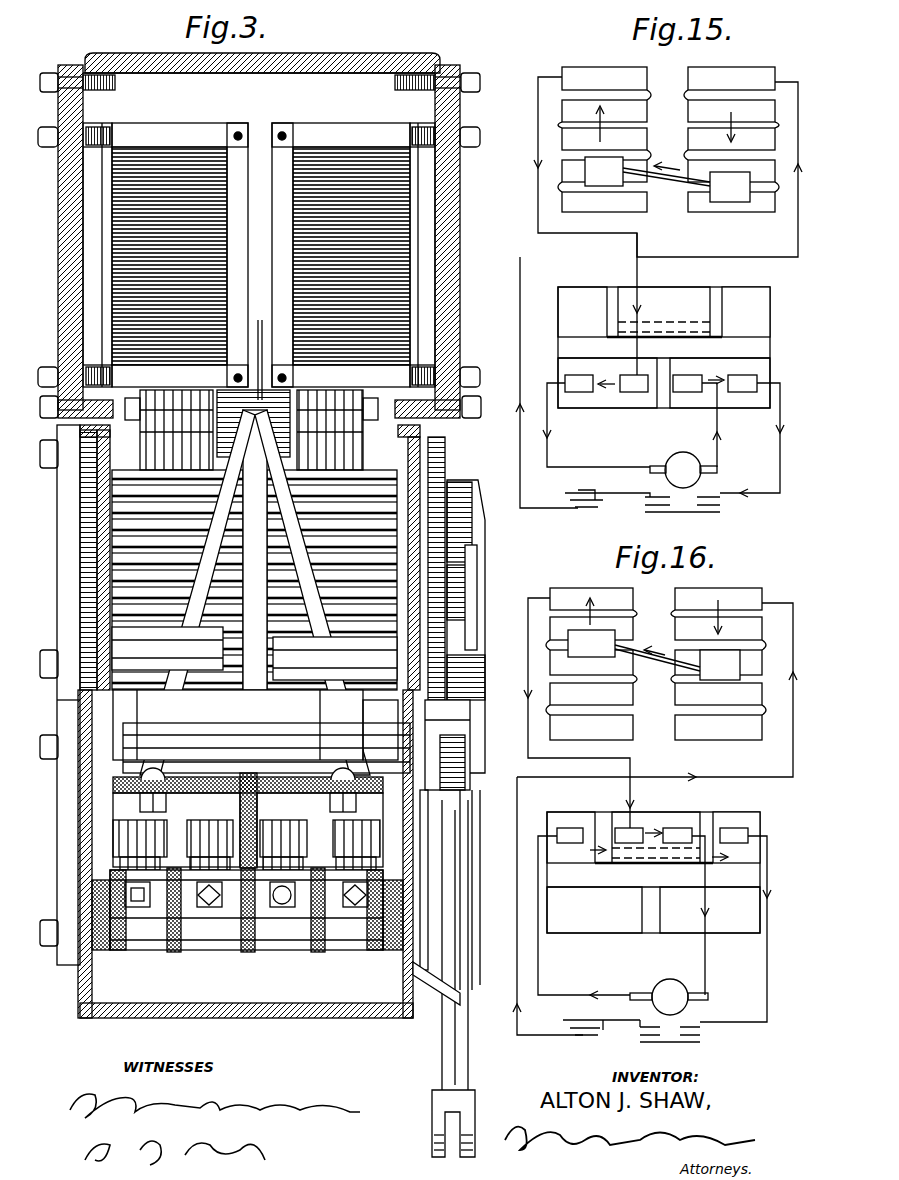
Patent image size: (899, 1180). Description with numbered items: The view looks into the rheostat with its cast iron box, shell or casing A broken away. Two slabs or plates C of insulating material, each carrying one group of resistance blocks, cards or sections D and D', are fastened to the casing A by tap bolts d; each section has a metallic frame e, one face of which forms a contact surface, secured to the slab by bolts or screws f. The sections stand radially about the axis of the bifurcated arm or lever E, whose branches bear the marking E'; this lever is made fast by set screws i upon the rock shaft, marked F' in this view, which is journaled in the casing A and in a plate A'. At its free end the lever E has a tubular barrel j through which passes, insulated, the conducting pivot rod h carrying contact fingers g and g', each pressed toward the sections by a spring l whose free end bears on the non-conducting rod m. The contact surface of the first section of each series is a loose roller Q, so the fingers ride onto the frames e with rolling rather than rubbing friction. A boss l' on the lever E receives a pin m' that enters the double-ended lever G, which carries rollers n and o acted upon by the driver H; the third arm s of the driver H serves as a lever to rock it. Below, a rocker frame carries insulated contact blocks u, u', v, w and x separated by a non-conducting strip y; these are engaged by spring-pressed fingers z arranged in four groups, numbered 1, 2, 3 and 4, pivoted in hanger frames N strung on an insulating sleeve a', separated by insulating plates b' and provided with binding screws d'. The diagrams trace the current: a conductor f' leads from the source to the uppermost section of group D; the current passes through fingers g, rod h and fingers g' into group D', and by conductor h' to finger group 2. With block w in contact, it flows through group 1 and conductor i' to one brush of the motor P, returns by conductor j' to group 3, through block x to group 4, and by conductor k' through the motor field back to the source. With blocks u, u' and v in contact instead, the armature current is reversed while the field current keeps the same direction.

In FIG. 3, the insulating slab C is at (258, 235).
In FIG. 3, the tap bolt d is at (262, 227).
In FIG. 3, the fastening screw f is at (256, 254).
In FIG. 3, the metallic frame e is at (259, 255).
In FIG. 3, the resistance section D' is at (180, 394).
In FIG. 15, the resistance section D' is at (604, 125).
In FIG. 16, the resistance section D' is at (591, 653).
In FIG. 3, the resistance section D is at (338, 394).
In FIG. 15, the resistance section D is at (731, 126).
In FIG. 16, the resistance section D is at (719, 654).
In FIG. 3, the tubular barrel j is at (254, 360).
In FIG. 3, the plate A' is at (237, 721).
In FIG. 3, the non-conducting rod m is at (55, 469).
In FIG. 3, the contact finger g' is at (215, 416).
In FIG. 15, the contact finger g' is at (604, 171).
In FIG. 16, the contact finger g' is at (591, 643).
In FIG. 3, the contact finger g is at (330, 414).
In FIG. 15, the contact finger g is at (686, 182).
In FIG. 16, the contact finger g is at (677, 662).
In FIG. 3, the conducting pivot rod h is at (254, 390).
In FIG. 3, the spring l is at (237, 496).
In FIG. 3, the lever E is at (233, 552).
In FIG. 3, the arms E' is at (255, 592).
In FIG. 3, the loose roller Q is at (254, 653).
In FIG. 3, the contact block v is at (238, 725).
In FIG. 15, the contact block v is at (664, 347).
In FIG. 16, the contact block v is at (653, 871).
In FIG. 3, the contact block u is at (124, 709).
In FIG. 15, the contact block u is at (582, 312).
In FIG. 16, the contact block u is at (571, 836).
In FIG. 3, the boss l' is at (350, 707).
In FIG. 3, the pin m' is at (380, 727).
In FIG. 3, the shaft F' is at (266, 748).
In FIG. 3, the non-conducting strip y is at (113, 785).
In FIG. 15, the non-conducting strip y is at (764, 348).
In FIG. 16, the non-conducting strip y is at (752, 876).
In FIG. 3, the set screw i is at (226, 792).
In FIG. 3, the contact block w is at (176, 830).
In FIG. 15, the contact block w is at (606, 393).
In FIG. 3, the contact block x is at (320, 829).
In FIG. 15, the contact block x is at (721, 395).
In FIG. 3, the spring-pressed finger z is at (200, 832).
In FIG. 15, the spring-pressed finger z is at (581, 393).
In FIG. 16, the spring-pressed finger z is at (573, 845).
In FIG. 3, the hanger frame N is at (246, 920).
In FIG. 3, the first group of contact fingers 1 is at (137, 913).
In FIG. 15, the first group of contact fingers 1 is at (579, 384).
In FIG. 16, the first group of contact fingers 1 is at (570, 836).
In FIG. 3, the second group of contact fingers 2 is at (209, 913).
In FIG. 15, the second group of contact fingers 2 is at (634, 384).
In FIG. 16, the second group of contact fingers 2 is at (629, 836).
In FIG. 3, the third group of contact fingers 3 is at (282, 913).
In FIG. 15, the third group of contact fingers 3 is at (687, 384).
In FIG. 16, the third group of contact fingers 3 is at (668, 836).
In FIG. 3, the fourth group of contact fingers 4 is at (355, 913).
In FIG. 15, the fourth group of contact fingers 4 is at (742, 384).
In FIG. 16, the fourth group of contact fingers 4 is at (734, 836).
In FIG. 3, the binding screw d' is at (117, 948).
In FIG. 3, the insulating plate b' is at (239, 976).
In FIG. 3, the casing A is at (273, 991).
In FIG. 3, the insulating sleeve a' is at (244, 935).
In FIG. 3, the driver H is at (480, 556).
In FIG. 3, the double-ended lever G is at (415, 745).
In FIG. 3, the roller n is at (465, 748).
In FIG. 3, the driver arm s is at (446, 973).
In FIG. 15, the conductor h' is at (572, 226).
In FIG. 16, the conductor h' is at (569, 713).
In FIG. 15, the conductor f' is at (664, 295).
In FIG. 16, the conductor f' is at (659, 819).
In FIG. 15, the contact block u' is at (746, 312).
In FIG. 16, the contact block u' is at (736, 837).
In FIG. 15, the conductor i' is at (596, 425).
In FIG. 16, the conductor i' is at (584, 917).
In FIG. 15, the conductor j' is at (719, 426).
In FIG. 16, the conductor j' is at (707, 915).
In FIG. 15, the conductor k' is at (766, 440).
In FIG. 16, the conductor k' is at (746, 929).
In FIG. 15, the motor P is at (683, 470).
In FIG. 16, the motor P is at (669, 997).
In FIG. 15, the roller o is at (642, 513).
In FIG. 16, the roller o is at (631, 1042).